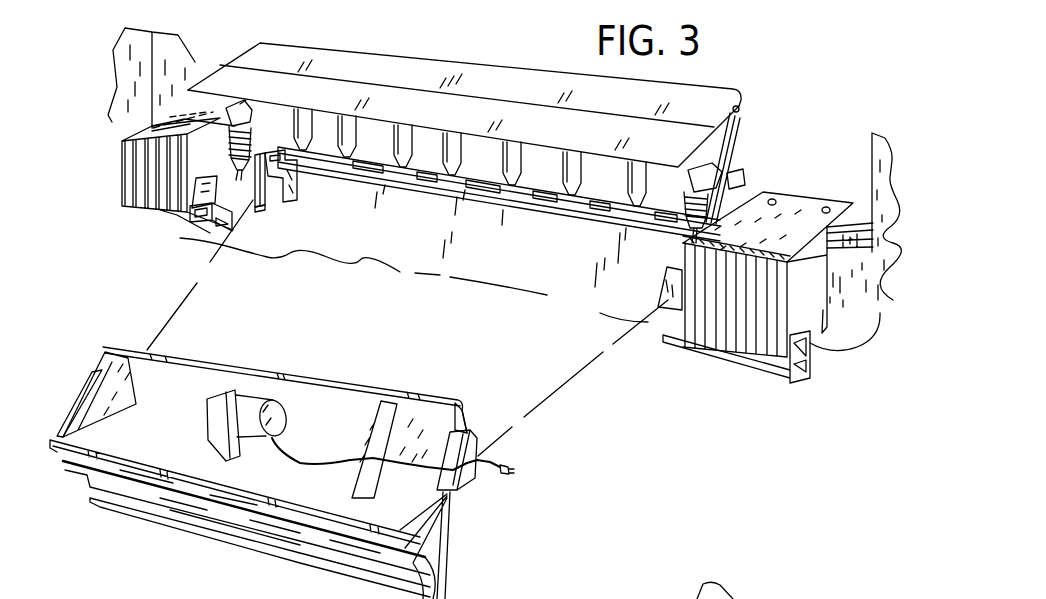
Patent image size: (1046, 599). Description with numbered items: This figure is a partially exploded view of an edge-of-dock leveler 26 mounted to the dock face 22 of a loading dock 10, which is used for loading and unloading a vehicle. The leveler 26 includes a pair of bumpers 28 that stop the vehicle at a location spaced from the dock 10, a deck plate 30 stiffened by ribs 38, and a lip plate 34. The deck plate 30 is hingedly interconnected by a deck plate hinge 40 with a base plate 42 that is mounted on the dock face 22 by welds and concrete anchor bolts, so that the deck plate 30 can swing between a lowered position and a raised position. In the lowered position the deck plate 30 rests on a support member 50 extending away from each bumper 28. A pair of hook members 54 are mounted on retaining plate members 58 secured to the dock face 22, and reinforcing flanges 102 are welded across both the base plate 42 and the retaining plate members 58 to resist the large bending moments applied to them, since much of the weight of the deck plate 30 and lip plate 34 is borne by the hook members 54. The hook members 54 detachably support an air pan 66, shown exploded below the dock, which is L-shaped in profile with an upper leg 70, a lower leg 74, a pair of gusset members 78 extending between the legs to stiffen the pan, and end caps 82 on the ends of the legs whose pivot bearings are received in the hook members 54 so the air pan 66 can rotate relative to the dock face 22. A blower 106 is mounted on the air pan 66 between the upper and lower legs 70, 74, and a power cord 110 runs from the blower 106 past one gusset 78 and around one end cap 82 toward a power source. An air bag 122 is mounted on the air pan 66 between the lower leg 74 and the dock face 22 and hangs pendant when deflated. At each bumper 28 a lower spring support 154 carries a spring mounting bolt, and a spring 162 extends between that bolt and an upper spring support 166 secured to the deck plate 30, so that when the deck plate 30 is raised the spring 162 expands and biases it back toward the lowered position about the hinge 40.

The loading dock 10 is at (145, 115).
The dock face 22 is at (512, 258).
The edge-of-dock leveler 26 is at (464, 85).
The bumpers 28 is at (128, 207).
The deck plate 30 is at (740, 143).
The lip plate 34 is at (323, 97).
The ribs 38 is at (402, 127).
The deck plate hinge 40 is at (437, 188).
The base plate 42 is at (499, 203).
The support member 50 is at (240, 200).
The hook members 54 is at (297, 195).
The retaining plate members 58 is at (283, 205).
The air pan 66 is at (310, 458).
The upper leg 70 is at (203, 380).
The lower leg 74 is at (220, 462).
The gusset members 78 is at (137, 408).
The end caps 82 is at (75, 412).
The reinforcing flanges 102 is at (257, 210).
The blower 106 is at (280, 378).
The power cord 110 is at (510, 463).
The air bag 122 is at (423, 577).
The lower spring support 154 is at (192, 222).
The spring 162 is at (228, 122).
The upper spring support 166 is at (241, 100).